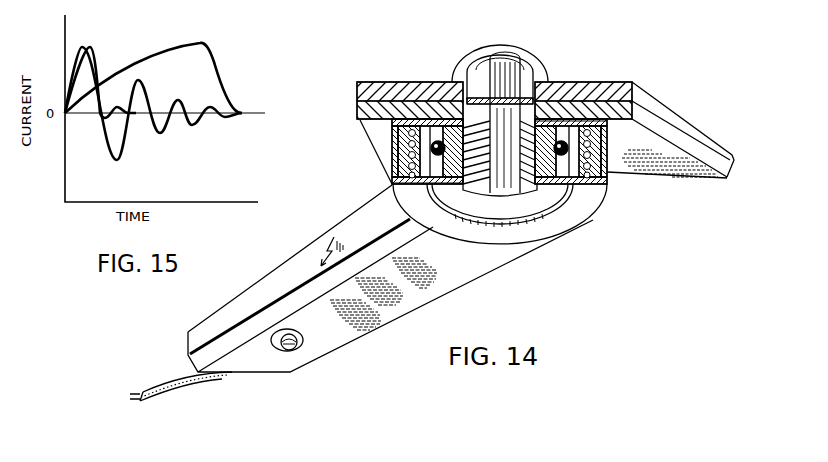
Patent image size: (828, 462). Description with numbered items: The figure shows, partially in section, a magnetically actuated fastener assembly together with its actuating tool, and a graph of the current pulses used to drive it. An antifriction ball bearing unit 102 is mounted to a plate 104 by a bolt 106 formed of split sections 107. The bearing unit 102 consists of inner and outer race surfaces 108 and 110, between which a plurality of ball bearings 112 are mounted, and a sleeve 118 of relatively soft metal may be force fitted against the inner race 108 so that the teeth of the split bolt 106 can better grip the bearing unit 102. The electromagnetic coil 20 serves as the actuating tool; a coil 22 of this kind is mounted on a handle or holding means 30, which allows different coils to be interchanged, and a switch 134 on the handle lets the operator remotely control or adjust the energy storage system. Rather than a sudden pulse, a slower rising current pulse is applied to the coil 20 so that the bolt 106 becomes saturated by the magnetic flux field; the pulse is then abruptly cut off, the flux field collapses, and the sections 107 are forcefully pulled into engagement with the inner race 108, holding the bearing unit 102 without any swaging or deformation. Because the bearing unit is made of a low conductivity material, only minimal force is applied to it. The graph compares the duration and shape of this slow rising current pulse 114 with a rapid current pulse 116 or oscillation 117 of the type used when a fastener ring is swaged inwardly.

In FIG. 14, the electromagnetic coil 20 is at (382, 161).
In FIG. 14, the coil 22 is at (605, 138).
In FIG. 14, the handle 30 is at (440, 278).
In FIG. 14, the antifriction ball bearing unit 102 is at (555, 192).
In FIG. 14, the plate 104 is at (408, 82).
In FIG. 14, the bolt 106 is at (487, 75).
In FIG. 14, the split sections 107 is at (525, 191).
In FIG. 14, the inner race surface 108 is at (457, 171).
In FIG. 14, the outer race surface 110 is at (430, 182).
In FIG. 14, the ball bearings 112 is at (572, 122).
In FIG. 14, the sleeve 118 is at (503, 191).
In FIG. 14, the switch 134 is at (296, 334).
In FIG. 15, the slow rising current pulse 114 is at (222, 80).
In FIG. 15, the current pulse 116 is at (80, 46).
In FIG. 15, the oscillation 117 is at (98, 62).